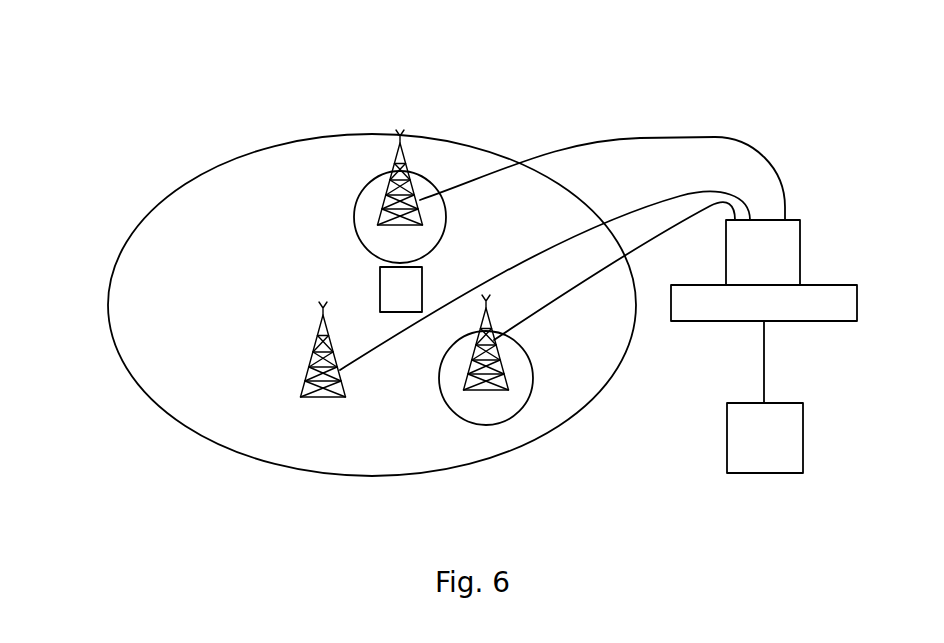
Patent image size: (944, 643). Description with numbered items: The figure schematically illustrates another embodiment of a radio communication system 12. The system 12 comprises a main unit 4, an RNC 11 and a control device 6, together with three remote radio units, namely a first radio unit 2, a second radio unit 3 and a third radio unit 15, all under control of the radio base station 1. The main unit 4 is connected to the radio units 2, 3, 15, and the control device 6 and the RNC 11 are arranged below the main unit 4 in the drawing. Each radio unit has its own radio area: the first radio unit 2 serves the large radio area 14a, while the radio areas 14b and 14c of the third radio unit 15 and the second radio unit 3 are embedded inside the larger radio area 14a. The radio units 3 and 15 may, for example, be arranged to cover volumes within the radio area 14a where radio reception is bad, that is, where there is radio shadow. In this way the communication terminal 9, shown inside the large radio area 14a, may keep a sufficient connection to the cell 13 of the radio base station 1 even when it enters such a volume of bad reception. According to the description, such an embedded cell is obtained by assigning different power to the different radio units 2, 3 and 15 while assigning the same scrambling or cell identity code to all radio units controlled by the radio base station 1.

The radio base station 1 is at (613, 195).
The radio unit 2 is at (273, 399).
The radio unit 3 is at (302, 170).
The main unit 4 is at (800, 259).
The control device 6 is at (671, 321).
The communication terminal 9 is at (423, 300).
The RNC 11 is at (751, 461).
The communication system 12 is at (743, 131).
The cell 13 is at (268, 103).
The radio area 14a is at (120, 306).
The radio area 14b is at (522, 397).
The radio area 14c is at (420, 185).
The radio unit 15 is at (416, 417).